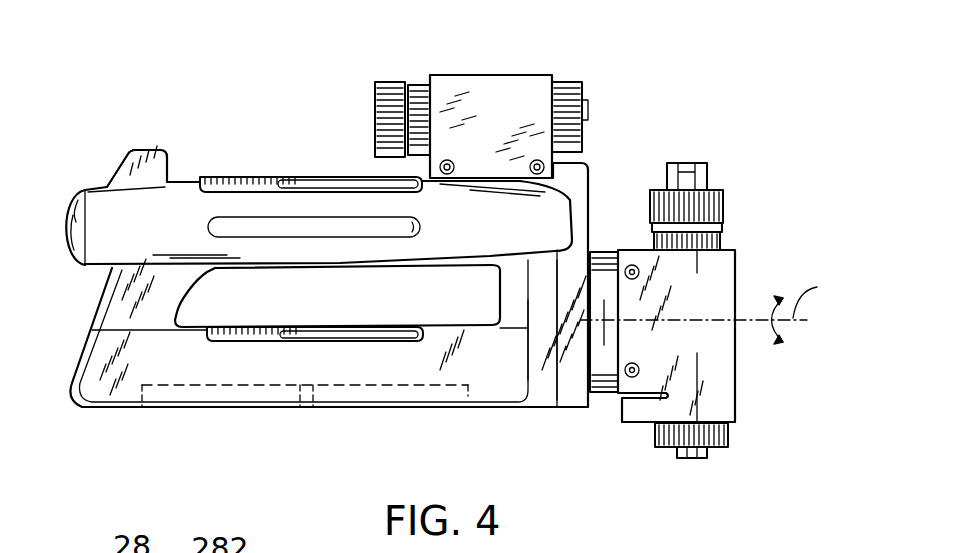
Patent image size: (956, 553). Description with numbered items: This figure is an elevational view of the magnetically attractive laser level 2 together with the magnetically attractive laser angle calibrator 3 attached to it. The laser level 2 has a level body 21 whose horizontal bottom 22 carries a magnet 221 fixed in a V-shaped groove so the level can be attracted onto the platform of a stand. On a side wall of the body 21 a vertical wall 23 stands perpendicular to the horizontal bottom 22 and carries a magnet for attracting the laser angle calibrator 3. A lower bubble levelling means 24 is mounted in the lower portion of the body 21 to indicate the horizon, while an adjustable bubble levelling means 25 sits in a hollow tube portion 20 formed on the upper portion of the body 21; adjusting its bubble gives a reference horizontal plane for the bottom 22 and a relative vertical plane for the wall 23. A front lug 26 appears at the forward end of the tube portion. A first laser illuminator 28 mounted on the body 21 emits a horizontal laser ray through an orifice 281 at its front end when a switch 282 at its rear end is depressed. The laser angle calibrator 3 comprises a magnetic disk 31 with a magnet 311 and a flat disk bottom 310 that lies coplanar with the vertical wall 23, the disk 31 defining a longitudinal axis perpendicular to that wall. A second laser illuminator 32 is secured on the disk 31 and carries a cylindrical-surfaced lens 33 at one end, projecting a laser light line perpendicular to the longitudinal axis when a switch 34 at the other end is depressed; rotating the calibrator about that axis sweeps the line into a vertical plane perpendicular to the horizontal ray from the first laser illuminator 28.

The magnetically attractive laser level 2 is at (342, 266).
The hollow tube portion 20 is at (319, 182).
The level body 21 is at (513, 355).
The horizontal bottom 22 is at (432, 408).
The magnet 221 is at (333, 393).
The vertical wall 23 is at (585, 357).
The lower bubble levelling means 24 is at (343, 322).
The adjustable bubble levelling means 25 is at (277, 177).
The front lug 26 is at (88, 187).
The first laser illuminator 28 is at (482, 95).
The orifice 281 is at (375, 120).
The switch 282 is at (590, 108).
The magnetically attractive laser angle calibrator 3 is at (716, 291).
The magnetic disk 31 is at (599, 265).
The flat disk bottom 310 is at (600, 352).
The magnet 311 is at (615, 338).
The second laser illuminator 32 is at (713, 277).
The cylindrical-surfaced lens 33 is at (688, 175).
The switch 34 is at (700, 460).